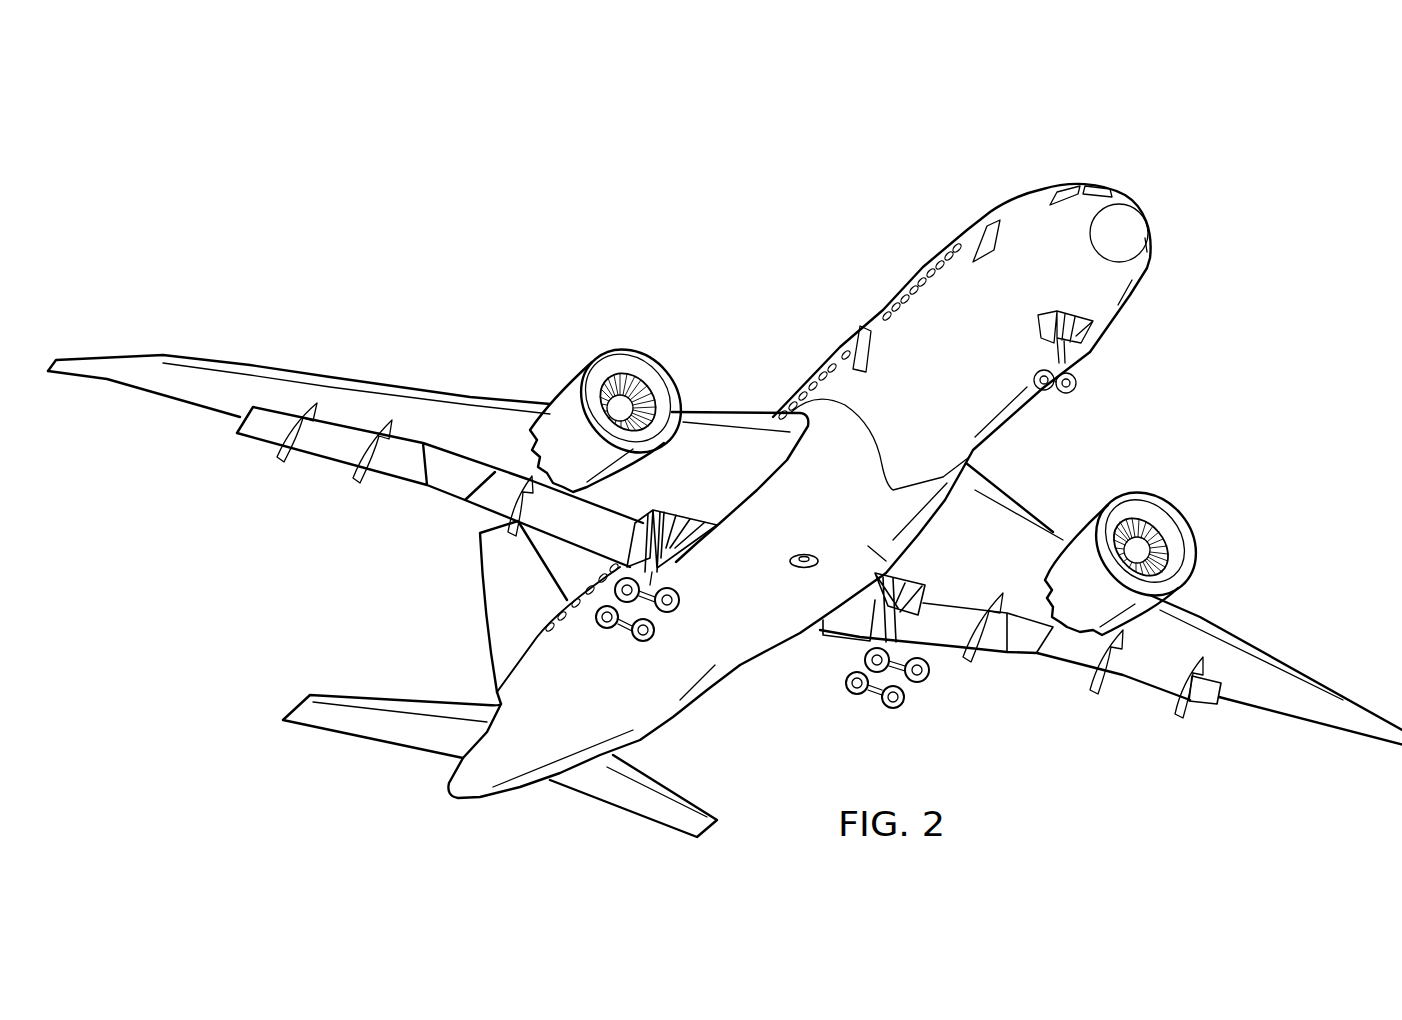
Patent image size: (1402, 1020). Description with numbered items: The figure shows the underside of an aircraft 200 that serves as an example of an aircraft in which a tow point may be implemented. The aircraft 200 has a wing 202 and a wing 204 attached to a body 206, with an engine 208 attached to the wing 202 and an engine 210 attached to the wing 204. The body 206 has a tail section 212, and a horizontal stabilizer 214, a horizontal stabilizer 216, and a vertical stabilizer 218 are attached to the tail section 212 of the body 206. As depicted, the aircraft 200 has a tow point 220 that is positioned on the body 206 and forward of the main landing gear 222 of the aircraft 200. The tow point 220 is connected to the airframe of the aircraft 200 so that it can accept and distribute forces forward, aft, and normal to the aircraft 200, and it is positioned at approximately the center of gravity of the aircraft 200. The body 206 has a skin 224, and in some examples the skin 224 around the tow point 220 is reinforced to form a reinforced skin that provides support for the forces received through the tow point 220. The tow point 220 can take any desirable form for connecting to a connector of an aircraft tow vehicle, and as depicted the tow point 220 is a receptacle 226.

The aircraft 200 is at (1110, 143).
The wing 202 is at (436, 386).
The wing 204 is at (1228, 636).
The body 206 is at (833, 353).
The engine 208 is at (652, 347).
The engine 210 is at (1160, 493).
The tail section 212 is at (398, 623).
The horizontal stabilizer 214 is at (367, 697).
The horizontal stabilizer 216 is at (680, 793).
The vertical stabilizer 218 is at (484, 590).
The tow point 220 is at (828, 545).
The main landing gear 222 is at (696, 580).
The skin 224 is at (888, 563).
The receptacle 226 is at (797, 568).